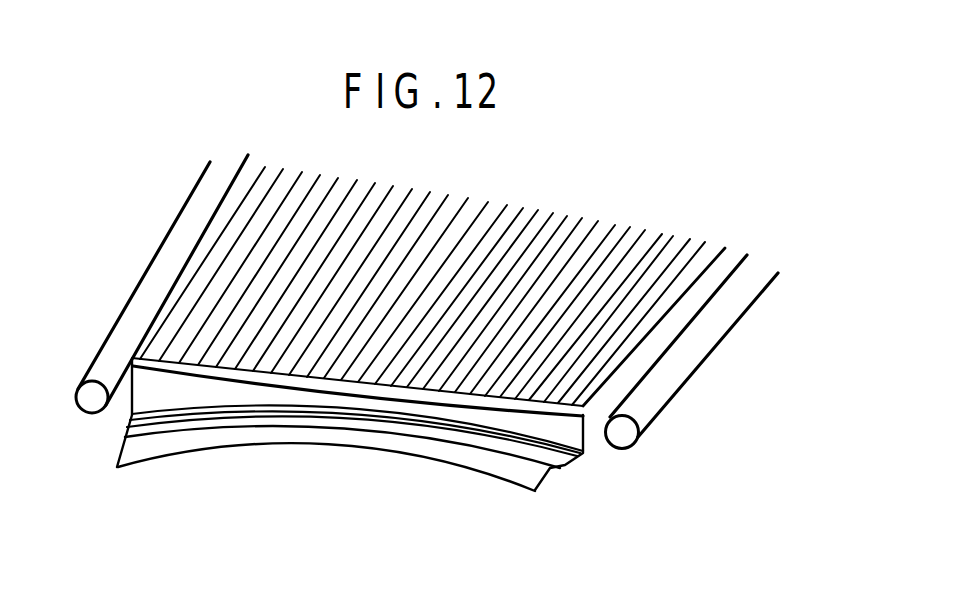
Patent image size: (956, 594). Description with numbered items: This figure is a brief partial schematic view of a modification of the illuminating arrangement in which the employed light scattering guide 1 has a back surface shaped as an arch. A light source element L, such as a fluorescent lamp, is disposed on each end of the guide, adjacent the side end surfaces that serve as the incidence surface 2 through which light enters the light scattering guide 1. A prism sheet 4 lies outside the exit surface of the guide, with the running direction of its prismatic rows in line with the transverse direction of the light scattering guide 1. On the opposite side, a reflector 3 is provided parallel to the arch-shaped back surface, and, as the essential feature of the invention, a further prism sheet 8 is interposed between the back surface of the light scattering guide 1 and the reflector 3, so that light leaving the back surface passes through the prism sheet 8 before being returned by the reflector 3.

The light scattering guide 1 is at (195, 390).
The incidence surface 2 is at (136, 391).
The reflector 3 is at (480, 465).
The prism sheet 4 is at (660, 243).
The prism sheet 8 is at (557, 465).
The light source element L is at (135, 313).